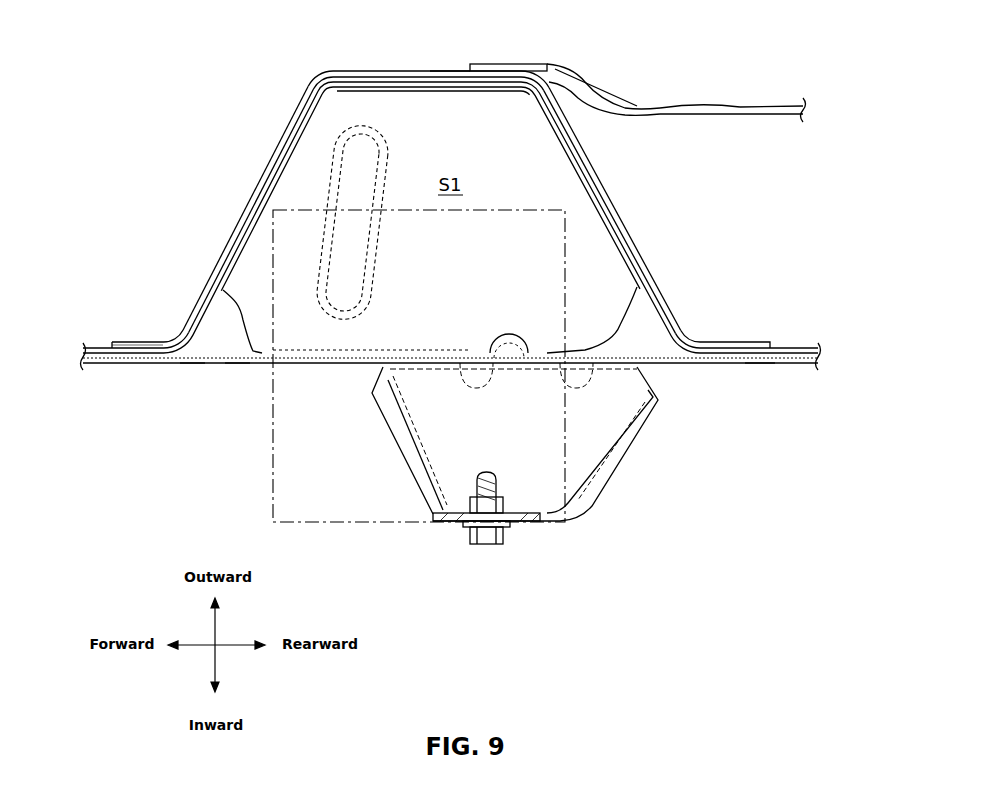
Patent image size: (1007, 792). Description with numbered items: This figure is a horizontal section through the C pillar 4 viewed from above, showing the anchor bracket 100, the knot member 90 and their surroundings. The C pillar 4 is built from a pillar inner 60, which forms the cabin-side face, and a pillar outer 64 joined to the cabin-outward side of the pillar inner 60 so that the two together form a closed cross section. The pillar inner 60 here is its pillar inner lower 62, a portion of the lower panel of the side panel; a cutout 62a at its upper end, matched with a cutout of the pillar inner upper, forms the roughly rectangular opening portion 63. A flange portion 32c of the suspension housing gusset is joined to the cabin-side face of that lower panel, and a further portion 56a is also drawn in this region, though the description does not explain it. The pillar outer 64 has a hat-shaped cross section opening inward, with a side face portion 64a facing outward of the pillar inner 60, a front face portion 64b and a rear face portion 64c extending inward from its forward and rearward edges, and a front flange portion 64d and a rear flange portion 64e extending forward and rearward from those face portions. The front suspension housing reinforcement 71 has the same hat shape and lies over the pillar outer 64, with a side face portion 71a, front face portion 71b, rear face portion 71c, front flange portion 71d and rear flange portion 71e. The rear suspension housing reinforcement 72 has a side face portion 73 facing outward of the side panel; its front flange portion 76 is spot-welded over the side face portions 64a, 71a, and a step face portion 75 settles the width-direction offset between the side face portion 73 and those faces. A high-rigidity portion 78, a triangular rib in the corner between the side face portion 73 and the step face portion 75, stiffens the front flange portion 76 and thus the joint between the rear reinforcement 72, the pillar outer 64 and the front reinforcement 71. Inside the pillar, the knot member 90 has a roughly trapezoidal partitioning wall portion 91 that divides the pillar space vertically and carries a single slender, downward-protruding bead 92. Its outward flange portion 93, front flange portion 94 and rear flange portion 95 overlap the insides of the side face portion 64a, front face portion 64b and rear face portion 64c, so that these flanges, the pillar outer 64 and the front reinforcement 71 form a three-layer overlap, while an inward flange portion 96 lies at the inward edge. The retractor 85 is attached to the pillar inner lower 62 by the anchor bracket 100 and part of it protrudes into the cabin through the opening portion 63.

The C pillar 4 is at (447, 50).
The flange portion 32c is at (760, 365).
The flange 56a is at (307, 367).
The pillar inner 60 is at (140, 374).
The pillar inner lower 62 is at (100, 366).
The cutout 62a is at (193, 366).
The opening portion 63 is at (237, 366).
The pillar outer 64 is at (451, 184).
The side face portion 64a is at (417, 96).
The front face portion 64b is at (293, 124).
The rear face portion 64c is at (549, 133).
The front flange portion 64d is at (93, 346).
The rear flange portion 64e is at (772, 350).
The front suspension housing reinforcement 71 is at (441, 187).
The side face portion 71a is at (398, 71).
The front face portion 71b is at (262, 175).
The rear face portion 71c is at (593, 167).
The front flange portion 71d is at (137, 342).
The rear flange portion 71e is at (737, 342).
The rear suspension housing reinforcement 72 is at (718, 104).
The side face portion 73 is at (768, 106).
The step face portion 75 is at (578, 88).
The front flange portion 76 is at (485, 64).
The high-rigidity portion 78 is at (595, 78).
The retractor 85 is at (273, 503).
The knot member 90 is at (645, 300).
The partitioning wall portion 91 is at (513, 100).
The bead 92 is at (368, 263).
The outward flange portion 93 is at (458, 90).
The front flange portion 94 is at (248, 255).
The rear flange portion 95 is at (610, 233).
The inward flange portion 96 is at (433, 353).
The anchor bracket 100 is at (617, 477).